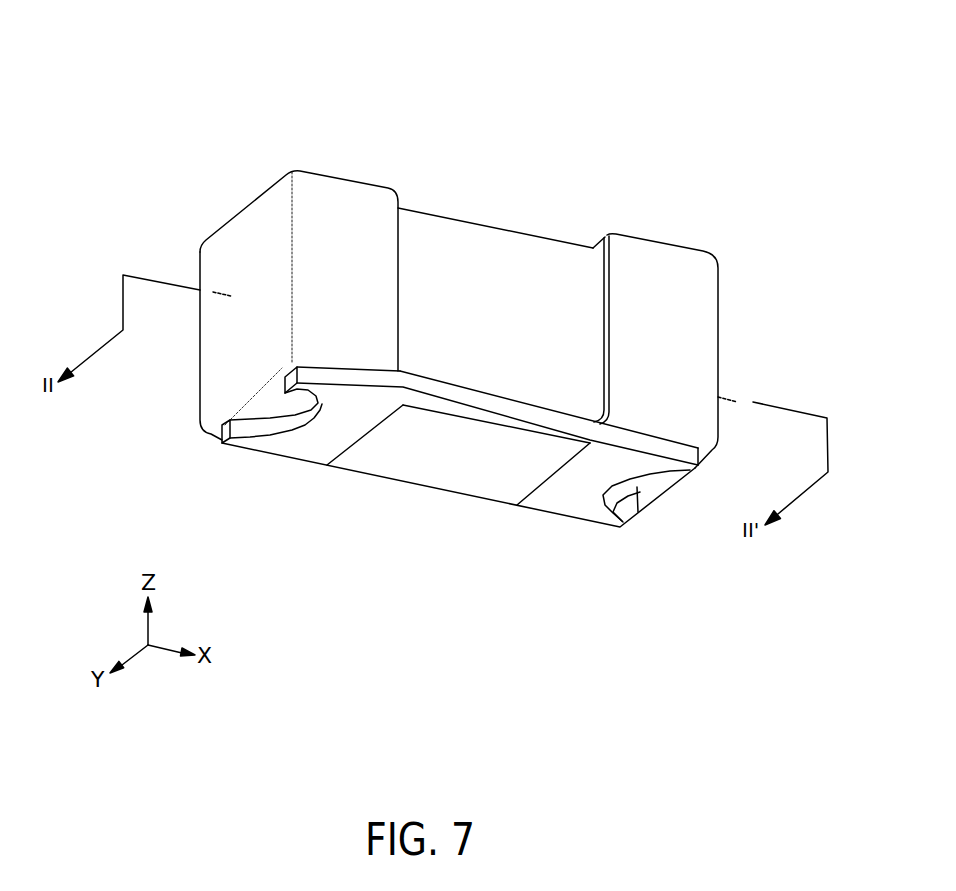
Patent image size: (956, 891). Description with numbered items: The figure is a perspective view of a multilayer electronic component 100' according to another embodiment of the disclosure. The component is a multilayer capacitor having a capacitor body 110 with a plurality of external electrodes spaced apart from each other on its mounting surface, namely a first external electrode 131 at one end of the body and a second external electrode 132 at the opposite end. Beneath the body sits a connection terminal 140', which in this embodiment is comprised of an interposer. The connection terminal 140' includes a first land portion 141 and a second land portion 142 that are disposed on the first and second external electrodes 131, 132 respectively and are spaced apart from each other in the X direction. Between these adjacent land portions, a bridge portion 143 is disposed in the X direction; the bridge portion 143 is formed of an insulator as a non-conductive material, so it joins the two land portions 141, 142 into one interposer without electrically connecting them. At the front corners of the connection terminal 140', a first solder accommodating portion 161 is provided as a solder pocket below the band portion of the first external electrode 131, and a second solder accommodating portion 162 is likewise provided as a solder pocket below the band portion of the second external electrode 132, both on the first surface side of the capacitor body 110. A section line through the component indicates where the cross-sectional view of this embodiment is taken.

The multilayer electronic component 100' is at (459, 312).
The capacitor body 110 is at (503, 253).
The first external electrode 131 is at (352, 160).
The second external electrode 132 is at (641, 218).
The connection terminal 140' is at (456, 489).
The first land portion 141 is at (305, 440).
The second land portion 142 is at (580, 497).
The bridge portion 143 is at (444, 470).
The first solder accommodating portion 161 is at (223, 447).
The second solder accommodating portion 162 is at (641, 507).